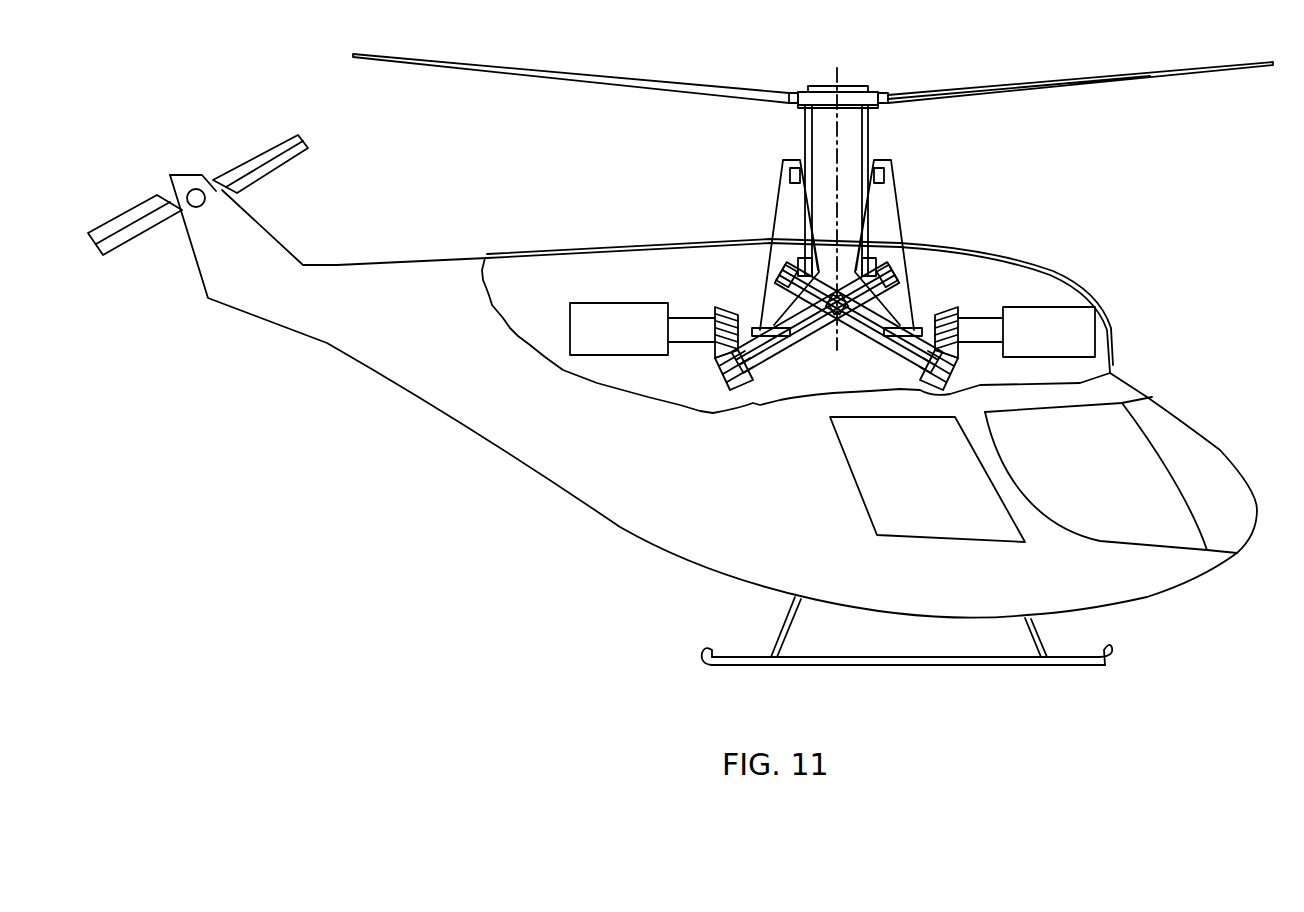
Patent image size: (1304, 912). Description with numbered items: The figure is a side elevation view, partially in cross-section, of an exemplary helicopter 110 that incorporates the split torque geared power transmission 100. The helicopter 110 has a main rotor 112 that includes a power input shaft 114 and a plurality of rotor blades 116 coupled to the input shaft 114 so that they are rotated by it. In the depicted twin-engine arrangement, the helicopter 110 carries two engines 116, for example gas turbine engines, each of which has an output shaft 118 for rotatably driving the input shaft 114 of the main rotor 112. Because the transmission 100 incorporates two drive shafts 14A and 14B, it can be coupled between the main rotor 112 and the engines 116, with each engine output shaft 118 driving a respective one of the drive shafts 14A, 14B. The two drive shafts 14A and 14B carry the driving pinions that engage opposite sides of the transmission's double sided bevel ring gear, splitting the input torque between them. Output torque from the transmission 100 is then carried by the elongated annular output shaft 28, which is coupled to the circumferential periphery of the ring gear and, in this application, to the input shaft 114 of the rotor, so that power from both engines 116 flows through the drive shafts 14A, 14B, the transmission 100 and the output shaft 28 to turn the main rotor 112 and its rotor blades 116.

The helicopter 110 is at (503, 527).
The split torque geared power transmission 100 is at (918, 202).
The main rotor 112 is at (853, 92).
The power input shaft 114 is at (805, 106).
The output shaft 28 is at (868, 120).
The rotor blades / engine 116 is at (627, 80).
The output shaft 118 is at (690, 325).
The drive shaft 14A is at (897, 357).
The drive shaft 14B is at (777, 357).